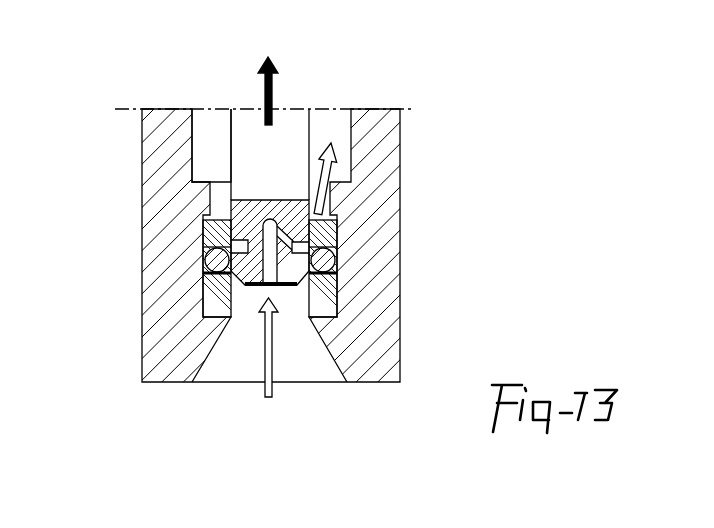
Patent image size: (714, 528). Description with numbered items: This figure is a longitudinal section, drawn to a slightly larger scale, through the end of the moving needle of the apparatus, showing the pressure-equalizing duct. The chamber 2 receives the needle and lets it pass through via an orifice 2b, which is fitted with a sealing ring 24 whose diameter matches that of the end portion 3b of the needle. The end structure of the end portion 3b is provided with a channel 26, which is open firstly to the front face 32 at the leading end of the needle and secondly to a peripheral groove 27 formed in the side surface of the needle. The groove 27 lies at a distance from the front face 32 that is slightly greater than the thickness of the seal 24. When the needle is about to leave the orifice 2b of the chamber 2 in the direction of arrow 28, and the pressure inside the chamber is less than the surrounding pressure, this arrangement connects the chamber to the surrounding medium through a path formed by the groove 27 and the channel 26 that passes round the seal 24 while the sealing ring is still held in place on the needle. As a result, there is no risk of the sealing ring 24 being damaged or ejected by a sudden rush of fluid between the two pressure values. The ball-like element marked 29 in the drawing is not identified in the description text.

The chamber 2 is at (212, 138).
The arrow 28 is at (272, 89).
The end portion of the needle 3b is at (298, 167).
The channel 26 is at (265, 217).
The peripheral groove 27 is at (230, 240).
The ball 29 is at (228, 272).
The sealing ring 24 is at (337, 265).
The front face 32 is at (260, 287).
The orifice 2b is at (282, 302).